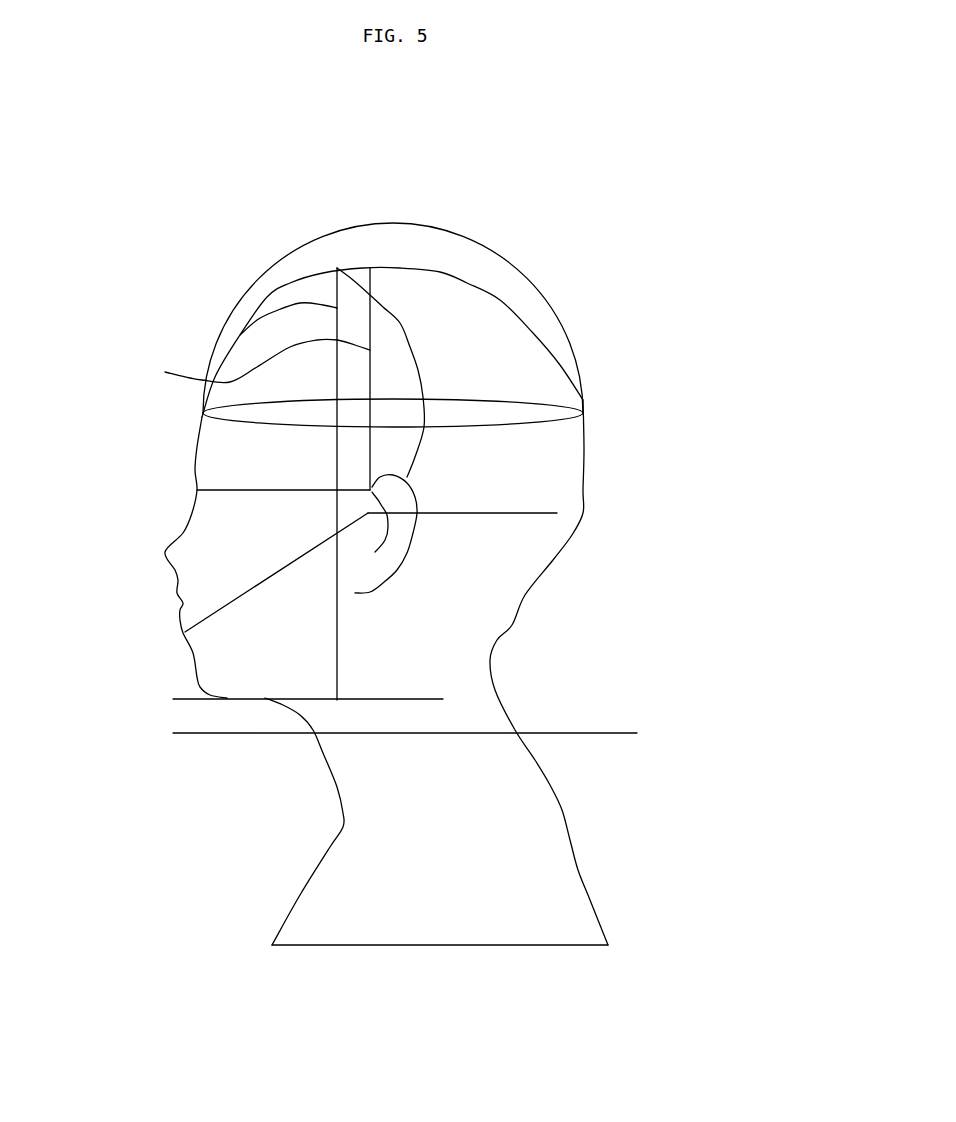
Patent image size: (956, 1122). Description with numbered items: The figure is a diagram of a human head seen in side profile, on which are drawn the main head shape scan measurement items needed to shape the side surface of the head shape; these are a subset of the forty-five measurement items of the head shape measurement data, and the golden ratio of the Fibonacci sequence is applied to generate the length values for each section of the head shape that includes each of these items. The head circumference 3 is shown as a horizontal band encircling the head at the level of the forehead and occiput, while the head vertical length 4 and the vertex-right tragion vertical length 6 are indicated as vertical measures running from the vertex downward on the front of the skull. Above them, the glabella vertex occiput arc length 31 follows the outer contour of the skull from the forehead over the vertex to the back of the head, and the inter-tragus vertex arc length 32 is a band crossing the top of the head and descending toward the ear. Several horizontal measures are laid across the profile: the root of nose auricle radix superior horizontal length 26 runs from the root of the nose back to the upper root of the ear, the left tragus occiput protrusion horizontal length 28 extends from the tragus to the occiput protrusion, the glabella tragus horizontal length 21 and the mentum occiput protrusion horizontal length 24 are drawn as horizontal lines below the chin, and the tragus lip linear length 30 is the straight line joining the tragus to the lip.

The head circumference 3 is at (583, 405).
The head vertical length 4 is at (240, 333).
The vertex-right tragion vertical length 6 is at (255, 364).
The glabella tragus horizontal length 21 is at (197, 698).
The mentum occiput protrusion horizontal length 24 is at (197, 733).
The root of nose auricle radix superior horizontal length 26 is at (208, 490).
The left tragus occiput protrusion horizontal length 28 is at (557, 513).
The tragus lip linear length 30 is at (222, 608).
The glabella vertex occiput arc length 31 is at (497, 250).
The inter-tragus vertex arc length 32 is at (400, 323).